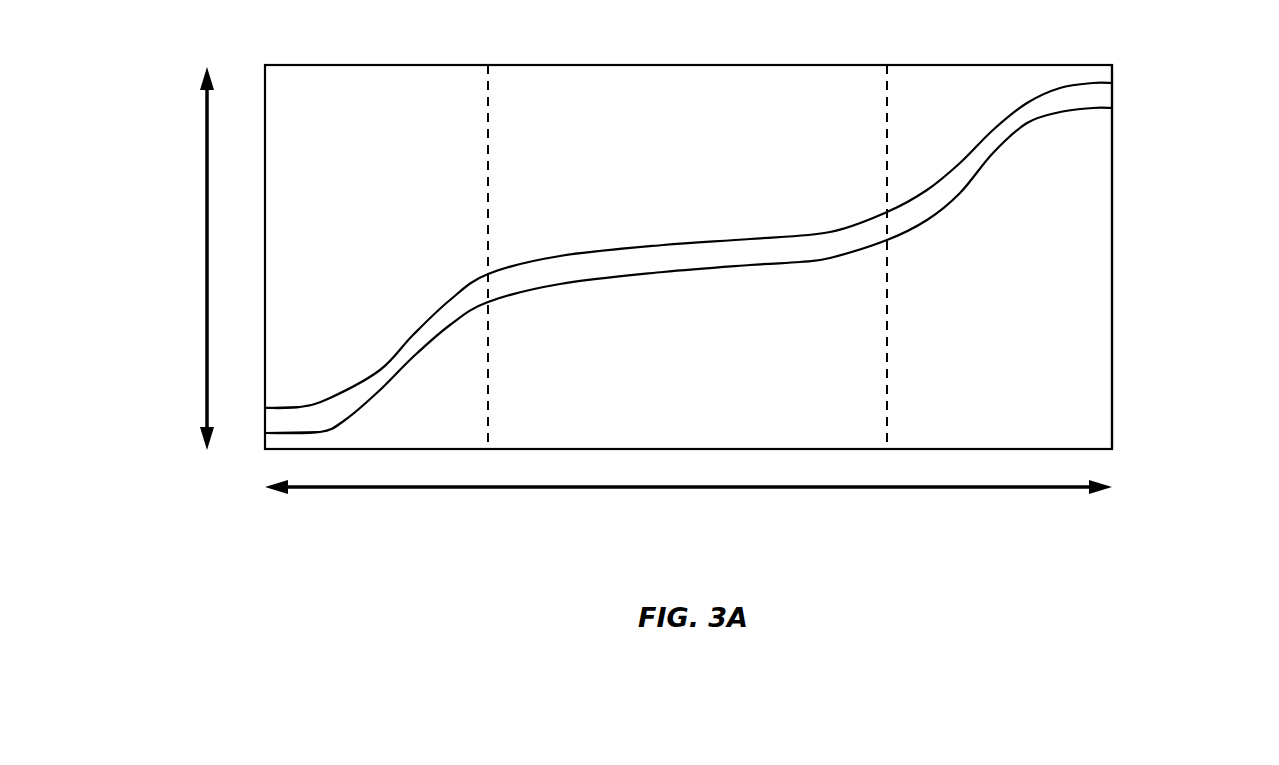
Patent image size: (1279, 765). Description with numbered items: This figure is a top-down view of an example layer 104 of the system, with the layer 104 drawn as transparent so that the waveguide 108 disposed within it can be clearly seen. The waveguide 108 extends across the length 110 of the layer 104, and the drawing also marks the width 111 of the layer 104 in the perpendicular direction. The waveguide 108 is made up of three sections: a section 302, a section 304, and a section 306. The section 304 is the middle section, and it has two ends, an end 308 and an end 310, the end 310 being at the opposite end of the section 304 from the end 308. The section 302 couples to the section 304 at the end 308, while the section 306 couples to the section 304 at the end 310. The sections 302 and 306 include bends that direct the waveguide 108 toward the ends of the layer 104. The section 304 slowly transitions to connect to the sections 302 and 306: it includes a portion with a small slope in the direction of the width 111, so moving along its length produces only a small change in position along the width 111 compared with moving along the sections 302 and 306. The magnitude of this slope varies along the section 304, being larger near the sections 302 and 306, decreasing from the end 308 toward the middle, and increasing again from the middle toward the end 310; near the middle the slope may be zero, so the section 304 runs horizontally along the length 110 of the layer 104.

The layer 104 is at (1112, 259).
The waveguide 108 is at (750, 240).
The length 110 is at (1028, 488).
The width 111 is at (207, 362).
The section 302 is at (331, 397).
The section 304 is at (568, 282).
The section 306 is at (947, 210).
The end 308 is at (518, 262).
The end 310 is at (843, 257).